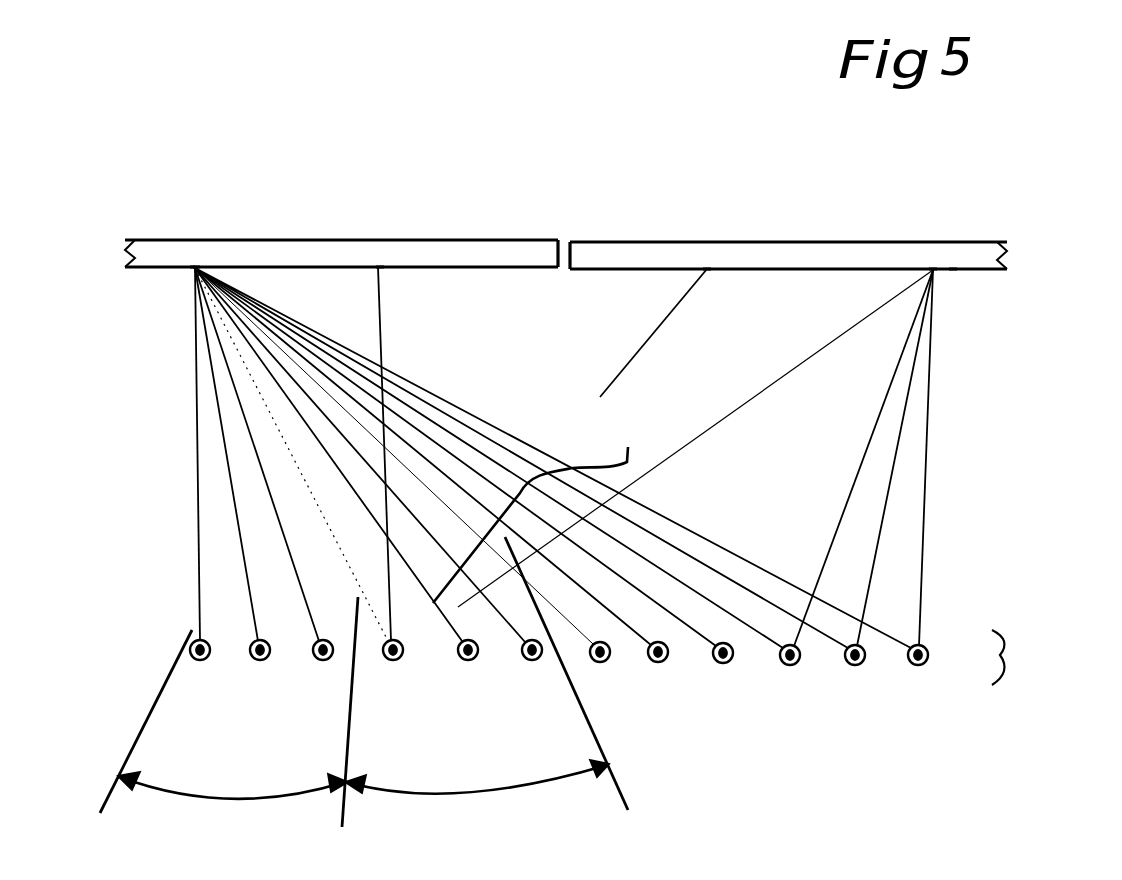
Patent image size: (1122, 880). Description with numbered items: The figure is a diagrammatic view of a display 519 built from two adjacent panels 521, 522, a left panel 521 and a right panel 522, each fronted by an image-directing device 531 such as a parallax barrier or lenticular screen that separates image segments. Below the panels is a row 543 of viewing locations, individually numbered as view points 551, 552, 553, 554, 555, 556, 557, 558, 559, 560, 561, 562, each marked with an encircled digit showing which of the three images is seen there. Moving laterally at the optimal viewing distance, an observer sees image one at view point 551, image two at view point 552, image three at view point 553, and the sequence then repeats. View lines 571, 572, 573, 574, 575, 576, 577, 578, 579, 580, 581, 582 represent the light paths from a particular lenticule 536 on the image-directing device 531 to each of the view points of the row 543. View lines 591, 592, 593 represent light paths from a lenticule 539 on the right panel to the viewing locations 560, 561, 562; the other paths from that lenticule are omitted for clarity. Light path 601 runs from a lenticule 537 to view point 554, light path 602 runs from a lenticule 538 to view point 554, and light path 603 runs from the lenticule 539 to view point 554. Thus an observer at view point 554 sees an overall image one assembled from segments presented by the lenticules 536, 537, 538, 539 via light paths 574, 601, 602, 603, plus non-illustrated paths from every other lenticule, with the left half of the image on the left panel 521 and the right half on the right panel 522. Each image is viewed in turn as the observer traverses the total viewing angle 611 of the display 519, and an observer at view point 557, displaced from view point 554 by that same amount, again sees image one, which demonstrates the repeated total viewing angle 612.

The display 519 is at (659, 112).
The left panel 521 is at (343, 240).
The right panel 522 is at (757, 242).
The image-directing device 531 is at (193, 291).
The lenticule 536 is at (195, 267).
The lenticule 537 is at (380, 267).
The lenticule 538 is at (707, 268).
The lenticule 539 is at (930, 268).
The row of viewing locations 543 is at (1051, 657).
The view point 551 is at (210, 658).
The view point 552 is at (270, 658).
The view point 553 is at (316, 658).
The view point 554 is at (405, 652).
The view point 555 is at (486, 636).
The view point 556 is at (540, 660).
The view point 557 is at (608, 663).
The view point 558 is at (666, 660).
The view point 559 is at (731, 661).
The view point 560 is at (800, 663).
The view point 561 is at (865, 664).
The view point 562 is at (925, 662).
The view line 571 is at (197, 422).
The view line 572 is at (222, 432).
The view line 573 is at (255, 452).
The view line 574 is at (312, 477).
The view line 575 is at (355, 490).
The view line 576 is at (342, 430).
The view line 577 is at (415, 447).
The view line 578 is at (463, 460).
The view line 579 is at (523, 480).
The view line 580 is at (561, 509).
The view line 581 is at (627, 490).
The view line 582 is at (693, 527).
The view line 591 is at (853, 467).
The view line 592 is at (893, 473).
The view line 593 is at (927, 513).
The light path 601 is at (380, 305).
The light path 602 is at (665, 318).
The light path 603 is at (863, 321).
The total viewing angle 611 is at (247, 797).
The repeated total viewing angle 612 is at (448, 795).